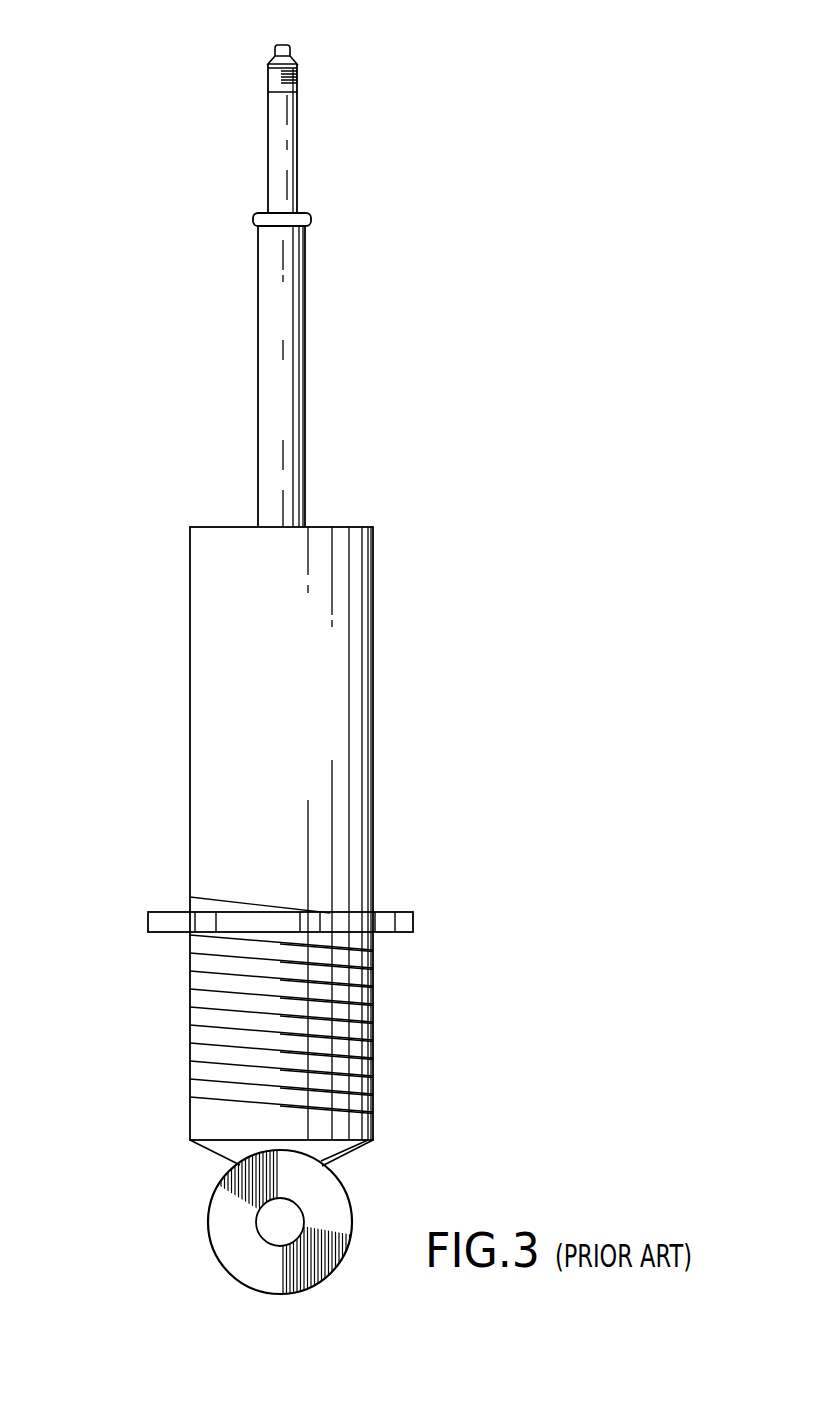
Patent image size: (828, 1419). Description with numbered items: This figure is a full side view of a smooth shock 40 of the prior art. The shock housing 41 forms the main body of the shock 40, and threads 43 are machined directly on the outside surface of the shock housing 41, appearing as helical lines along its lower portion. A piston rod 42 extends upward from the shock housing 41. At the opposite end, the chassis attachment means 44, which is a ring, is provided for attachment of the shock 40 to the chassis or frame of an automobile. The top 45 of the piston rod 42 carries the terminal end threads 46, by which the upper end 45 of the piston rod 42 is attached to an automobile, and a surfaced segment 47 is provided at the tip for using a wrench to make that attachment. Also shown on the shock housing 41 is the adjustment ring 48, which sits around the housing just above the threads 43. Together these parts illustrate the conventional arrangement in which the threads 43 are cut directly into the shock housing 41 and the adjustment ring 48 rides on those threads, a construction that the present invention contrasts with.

The smooth shock 40 is at (485, 523).
The shock housing 41 is at (190, 655).
The piston rod 42 is at (257, 264).
The threads 43 is at (190, 1012).
The chassis attachment means 44 is at (208, 1222).
The top of the piston rod 45 is at (266, 177).
The terminal end threads 46 is at (266, 98).
The surfaced segment 47 is at (274, 51).
The adjustment ring 48 is at (413, 922).